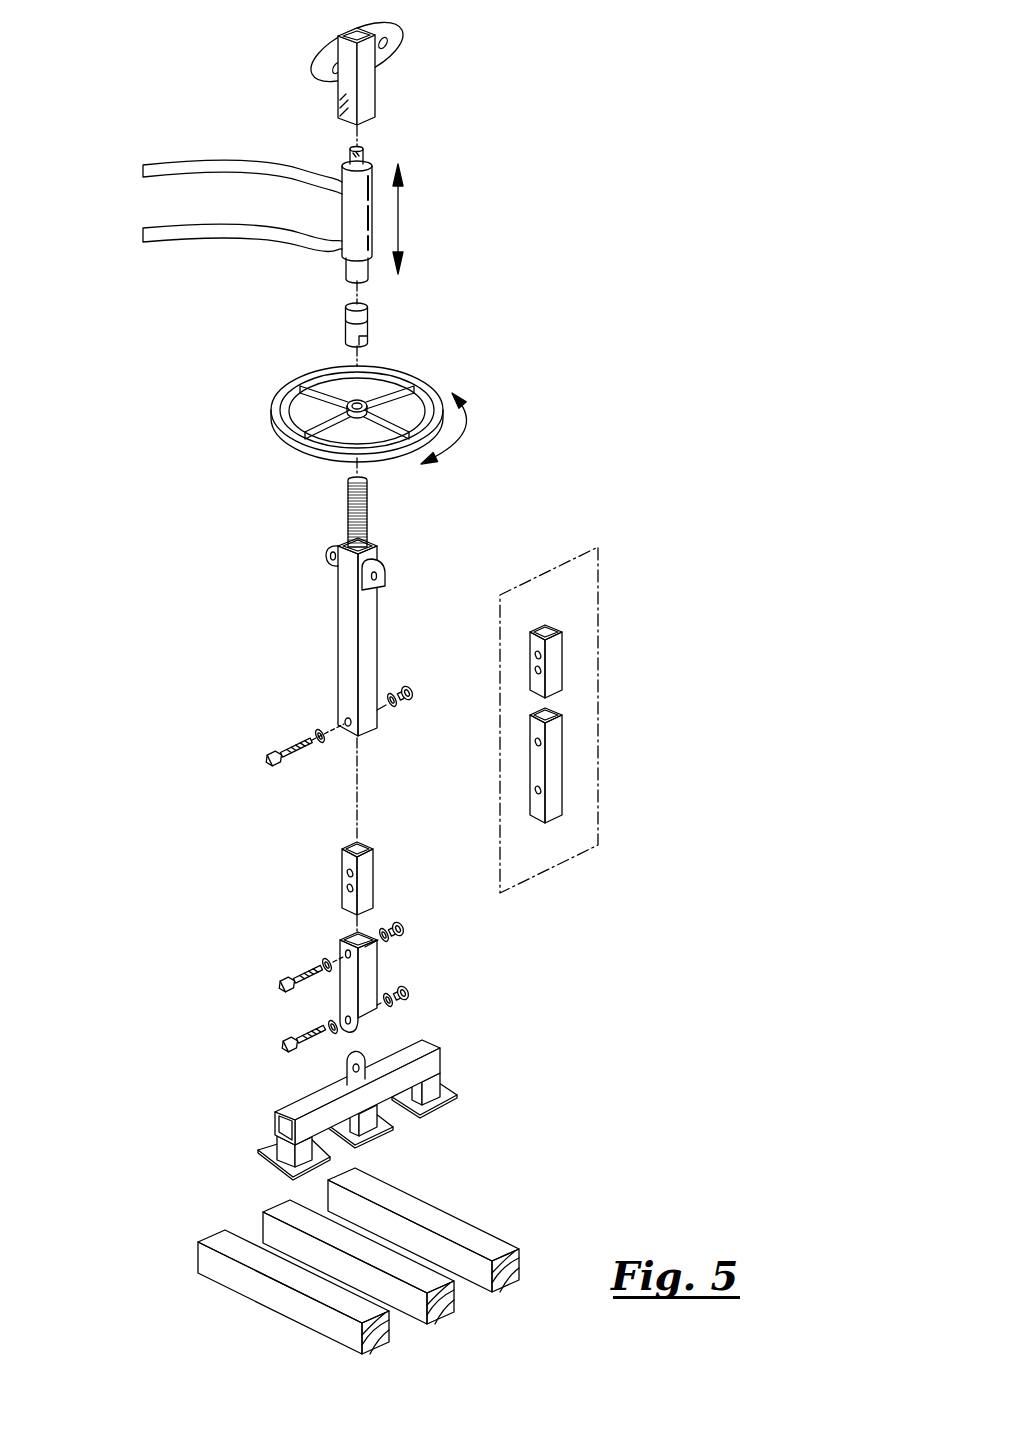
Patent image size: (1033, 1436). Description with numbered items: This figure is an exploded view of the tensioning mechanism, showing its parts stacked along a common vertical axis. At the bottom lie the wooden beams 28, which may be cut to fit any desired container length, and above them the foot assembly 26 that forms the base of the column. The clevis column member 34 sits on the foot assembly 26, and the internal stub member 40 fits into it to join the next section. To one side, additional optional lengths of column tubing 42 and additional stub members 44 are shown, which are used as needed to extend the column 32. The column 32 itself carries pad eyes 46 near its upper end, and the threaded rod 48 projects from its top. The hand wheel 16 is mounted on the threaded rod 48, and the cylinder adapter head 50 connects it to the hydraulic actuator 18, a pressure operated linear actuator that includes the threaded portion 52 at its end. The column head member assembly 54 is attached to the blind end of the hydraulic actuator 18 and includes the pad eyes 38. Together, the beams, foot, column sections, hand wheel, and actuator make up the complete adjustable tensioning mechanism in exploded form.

The hand wheel 16 is at (297, 390).
The hydraulic actuator 18 is at (353, 218).
The foot assembly 26 is at (455, 1041).
The wooden beams 28 is at (283, 1207).
The column 32 is at (343, 642).
The clevis column member 34 is at (366, 970).
The pad eyes 38 is at (330, 55).
The internal stub member 40 is at (368, 870).
The column tubing 42 is at (556, 765).
The stub members 44 is at (553, 657).
The pad eyes 46 is at (327, 549).
The threaded rod 48 is at (370, 517).
The cylinder adapter head 50 is at (368, 327).
The threaded portion 52 is at (343, 150).
The column head member assembly 54 is at (395, 84).